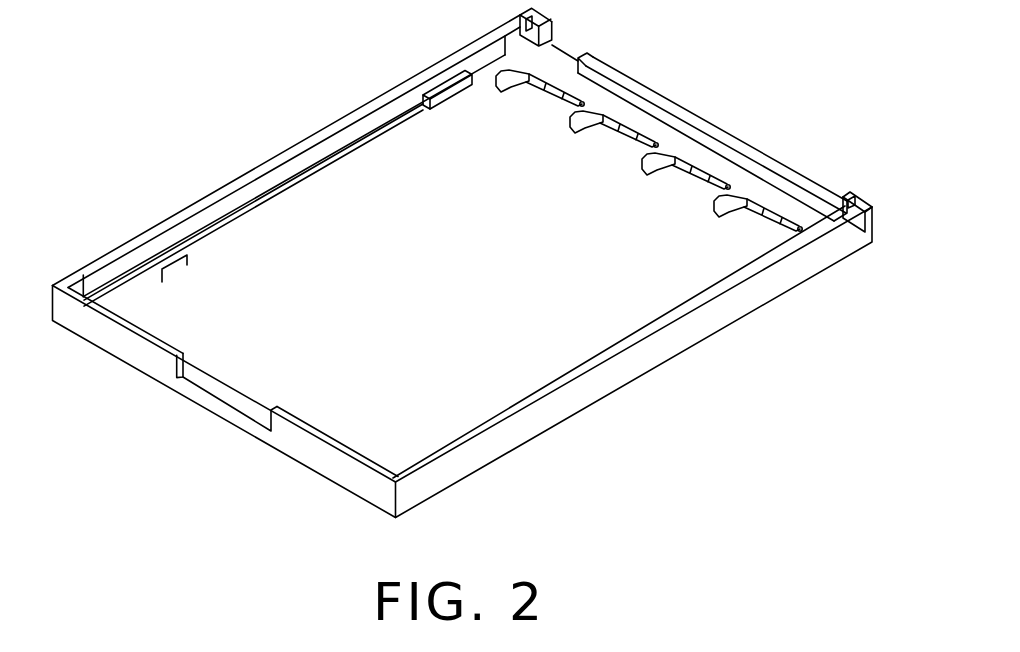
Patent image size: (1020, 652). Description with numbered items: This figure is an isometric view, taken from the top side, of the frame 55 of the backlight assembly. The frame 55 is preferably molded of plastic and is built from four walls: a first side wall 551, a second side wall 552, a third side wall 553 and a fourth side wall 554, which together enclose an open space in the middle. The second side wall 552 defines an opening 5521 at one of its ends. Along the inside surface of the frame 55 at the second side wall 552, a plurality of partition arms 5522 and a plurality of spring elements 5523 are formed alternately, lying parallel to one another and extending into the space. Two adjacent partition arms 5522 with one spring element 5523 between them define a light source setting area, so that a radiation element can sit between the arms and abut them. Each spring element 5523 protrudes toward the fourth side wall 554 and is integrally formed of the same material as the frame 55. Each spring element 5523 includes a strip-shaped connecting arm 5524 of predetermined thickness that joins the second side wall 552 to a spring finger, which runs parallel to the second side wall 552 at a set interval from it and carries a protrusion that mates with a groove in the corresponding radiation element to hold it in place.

The frame 55 is at (206, 436).
The first side wall 551 is at (542, 398).
The second side wall 552 is at (582, 88).
The third side wall 553 is at (317, 155).
The fourth side wall 554 is at (318, 440).
The opening 5521 is at (553, 55).
The partition arms 5522 is at (745, 193).
The spring elements 5523 is at (649, 223).
The connecting arm 5524 is at (693, 196).